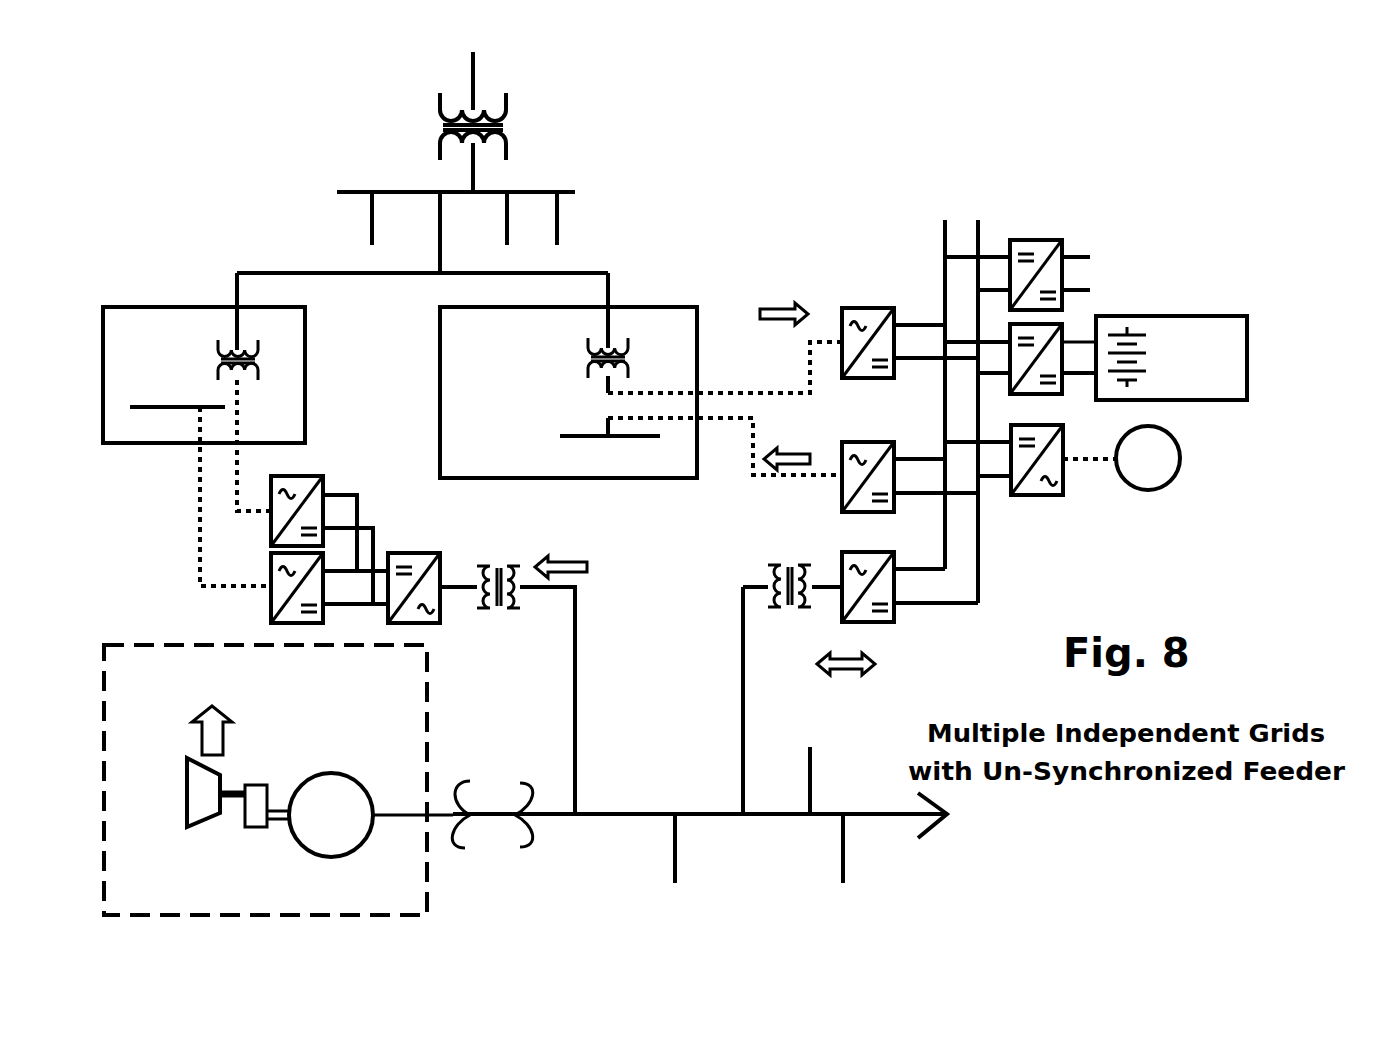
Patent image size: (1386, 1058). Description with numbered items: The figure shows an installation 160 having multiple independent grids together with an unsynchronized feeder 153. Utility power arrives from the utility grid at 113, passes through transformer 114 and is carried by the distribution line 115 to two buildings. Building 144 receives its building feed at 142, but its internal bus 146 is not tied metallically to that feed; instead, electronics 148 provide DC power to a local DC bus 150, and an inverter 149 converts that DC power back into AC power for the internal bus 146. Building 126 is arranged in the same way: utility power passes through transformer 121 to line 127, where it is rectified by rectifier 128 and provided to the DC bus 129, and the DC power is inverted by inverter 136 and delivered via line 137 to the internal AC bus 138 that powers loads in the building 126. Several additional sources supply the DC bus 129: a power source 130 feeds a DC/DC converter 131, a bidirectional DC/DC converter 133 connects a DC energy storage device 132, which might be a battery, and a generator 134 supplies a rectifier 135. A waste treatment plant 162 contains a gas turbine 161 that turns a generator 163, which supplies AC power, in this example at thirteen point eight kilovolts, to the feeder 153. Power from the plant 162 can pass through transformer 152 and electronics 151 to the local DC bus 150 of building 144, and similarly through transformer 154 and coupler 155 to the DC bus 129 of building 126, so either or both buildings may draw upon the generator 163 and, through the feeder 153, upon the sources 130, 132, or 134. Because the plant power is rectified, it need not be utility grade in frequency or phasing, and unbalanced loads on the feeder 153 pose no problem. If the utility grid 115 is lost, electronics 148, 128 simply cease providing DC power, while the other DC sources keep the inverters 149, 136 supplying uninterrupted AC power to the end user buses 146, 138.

The utility grid 113 is at (480, 80).
The step-down transformer 114 is at (515, 150).
The distribution line 115 is at (422, 184).
The installation 160 is at (318, 98).
The building feed 142 is at (218, 360).
The building 144 is at (312, 393).
The internal bus 146 is at (181, 403).
The electronics 148 is at (313, 472).
The inverter 149 is at (264, 588).
The local DC bus 150 is at (363, 508).
The electronics 151 is at (448, 560).
The transformer 152 is at (488, 618).
The feeder 153 is at (623, 808).
The transformer 154 is at (777, 618).
The coupler 155 is at (882, 628).
The gas turbine 161 is at (180, 793).
The waste treatment plant 162 is at (432, 755).
The generator 163 is at (313, 765).
The building 126 is at (635, 300).
The transformer 121 is at (580, 370).
The internal AC bus 138 is at (578, 425).
The line 127 is at (723, 387).
The line 137 is at (730, 413).
The rectifier 128 is at (855, 305).
The inverter 136 is at (878, 440).
The DC bus 129 is at (958, 230).
The DC/DC converter 131 is at (1083, 240).
The power source 130 is at (1232, 278).
The bidirectional DC/DC converter 133 is at (1044, 395).
The DC energy storage device 132 is at (1255, 363).
The rectifier 135 is at (1028, 497).
The generator 134 is at (1183, 473).